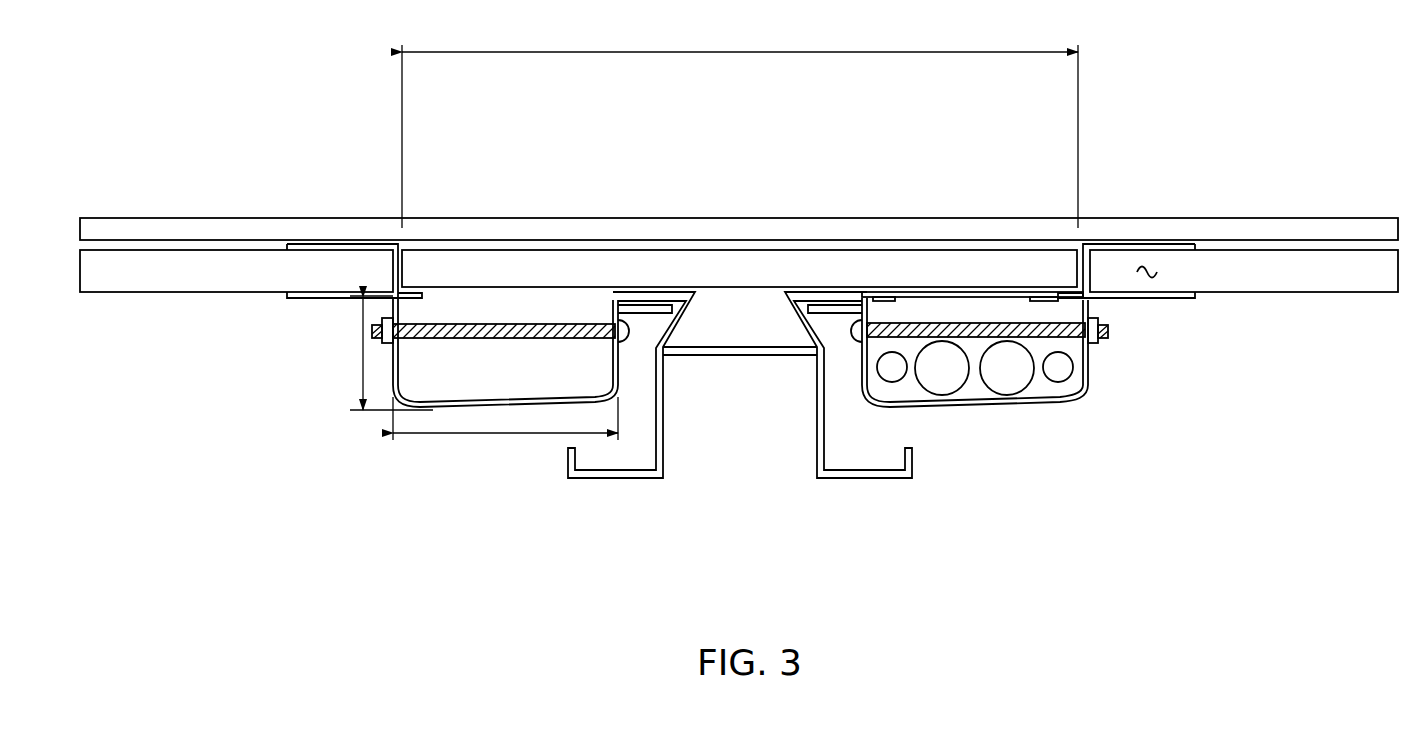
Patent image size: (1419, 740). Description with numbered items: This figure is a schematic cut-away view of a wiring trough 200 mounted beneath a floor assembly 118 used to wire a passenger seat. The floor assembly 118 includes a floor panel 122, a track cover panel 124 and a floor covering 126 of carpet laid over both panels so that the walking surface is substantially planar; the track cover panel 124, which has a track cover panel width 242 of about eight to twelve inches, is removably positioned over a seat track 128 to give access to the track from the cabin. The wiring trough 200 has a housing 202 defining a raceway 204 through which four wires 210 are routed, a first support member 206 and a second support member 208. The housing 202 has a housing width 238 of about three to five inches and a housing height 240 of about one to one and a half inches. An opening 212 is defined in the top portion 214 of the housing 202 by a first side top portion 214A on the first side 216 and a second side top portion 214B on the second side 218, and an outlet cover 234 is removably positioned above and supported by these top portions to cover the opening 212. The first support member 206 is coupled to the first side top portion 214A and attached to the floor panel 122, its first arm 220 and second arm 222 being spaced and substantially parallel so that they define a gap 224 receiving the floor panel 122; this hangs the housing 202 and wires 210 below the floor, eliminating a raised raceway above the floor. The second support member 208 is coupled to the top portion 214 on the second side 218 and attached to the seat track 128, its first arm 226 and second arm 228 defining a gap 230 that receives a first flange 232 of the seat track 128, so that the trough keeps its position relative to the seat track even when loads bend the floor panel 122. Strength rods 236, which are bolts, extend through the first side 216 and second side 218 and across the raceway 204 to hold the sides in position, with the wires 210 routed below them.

The floor assembly 118 is at (970, 114).
The floor panel 122 is at (183, 293).
The track cover panel 124 is at (604, 250).
The floor covering 126 is at (472, 219).
The seat track 128 is at (605, 479).
The wiring trough 200 is at (733, 406).
The housing 202 is at (978, 410).
The raceway 204 is at (990, 321).
The first support member 206 is at (1185, 297).
The second support member 208 is at (840, 292).
The wires 210 is at (1064, 381).
The opening 212 is at (980, 266).
The top portion 214 is at (986, 288).
The first side top portion 214A is at (1062, 297).
The second side top portion 214B is at (880, 297).
The first side 216 is at (1090, 373).
The second side 218 is at (848, 378).
The first arm 220 is at (1183, 245).
The second arm 222 is at (1175, 293).
The gap 224 is at (1153, 262).
The first arm 226 is at (826, 300).
The second arm 228 is at (834, 313).
The gap 230 is at (826, 305).
The first flange 232 is at (806, 304).
The outlet cover 234 is at (942, 290).
The strength rods 236 is at (1099, 344).
The housing width 238 is at (472, 434).
The housing height 240 is at (362, 365).
The track cover panel width 242 is at (848, 52).